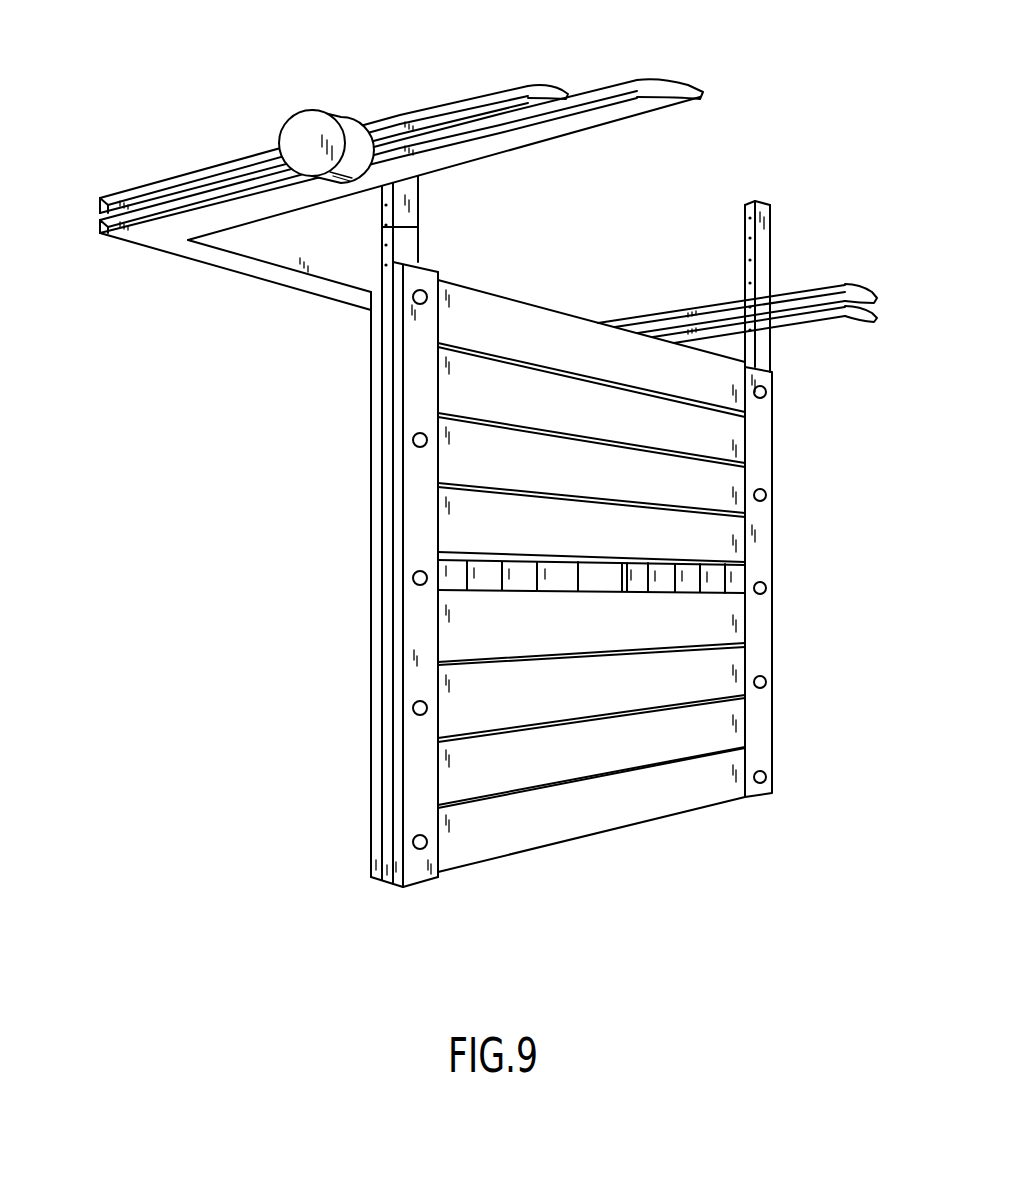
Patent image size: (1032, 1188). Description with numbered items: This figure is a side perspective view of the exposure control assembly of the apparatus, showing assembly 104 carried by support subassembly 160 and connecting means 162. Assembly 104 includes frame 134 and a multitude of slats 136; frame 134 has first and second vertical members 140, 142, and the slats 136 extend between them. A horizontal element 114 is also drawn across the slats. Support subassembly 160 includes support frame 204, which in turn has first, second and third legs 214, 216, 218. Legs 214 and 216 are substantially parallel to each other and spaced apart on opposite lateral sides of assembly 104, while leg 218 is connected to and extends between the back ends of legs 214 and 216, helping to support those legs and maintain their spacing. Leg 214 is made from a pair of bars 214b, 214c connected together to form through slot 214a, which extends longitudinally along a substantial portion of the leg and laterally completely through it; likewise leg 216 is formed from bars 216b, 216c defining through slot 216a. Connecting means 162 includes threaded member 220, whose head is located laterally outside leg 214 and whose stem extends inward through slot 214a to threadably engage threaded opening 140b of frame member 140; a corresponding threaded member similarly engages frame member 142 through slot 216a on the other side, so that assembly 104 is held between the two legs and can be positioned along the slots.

The assembly 104 is at (478, 582).
The latch rail 114 is at (607, 585).
The frame 134 is at (762, 483).
The slats 136 is at (466, 886).
The first vertical member 140 is at (402, 530).
The threaded opening 140b is at (385, 227).
The second vertical member 142 is at (766, 571).
The support subassembly 160 is at (365, 193).
The connecting means 162 is at (365, 193).
The support frame 204 is at (760, 329).
The first leg 214 is at (365, 179).
The through slot 214a is at (100, 215).
The bar 214b is at (183, 177).
The bar 214c is at (180, 208).
The second leg 216 is at (760, 305).
The through slot 216a is at (818, 318).
The bar 216b is at (866, 288).
The bar 216c is at (867, 318).
The third leg 218 is at (282, 279).
The threaded member 220 is at (298, 122).